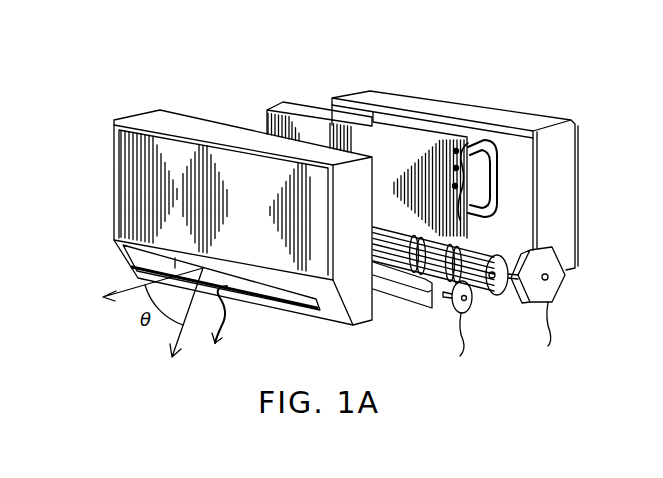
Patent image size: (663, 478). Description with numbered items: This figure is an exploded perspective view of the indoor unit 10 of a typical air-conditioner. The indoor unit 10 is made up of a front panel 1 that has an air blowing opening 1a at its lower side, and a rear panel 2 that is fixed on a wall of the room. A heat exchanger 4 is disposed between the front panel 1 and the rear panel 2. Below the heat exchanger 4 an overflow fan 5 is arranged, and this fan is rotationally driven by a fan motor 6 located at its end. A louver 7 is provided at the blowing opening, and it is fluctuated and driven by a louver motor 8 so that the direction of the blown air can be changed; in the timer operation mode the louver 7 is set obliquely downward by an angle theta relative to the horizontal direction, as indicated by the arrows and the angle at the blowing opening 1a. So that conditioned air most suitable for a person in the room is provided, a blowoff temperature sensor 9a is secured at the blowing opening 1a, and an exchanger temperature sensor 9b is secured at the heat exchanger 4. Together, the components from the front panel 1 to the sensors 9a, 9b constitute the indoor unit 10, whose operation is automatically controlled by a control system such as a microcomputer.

The front panel 1 is at (170, 122).
The blowing opening 1a is at (131, 259).
The rear panel 2 is at (413, 101).
The heat exchanger 4 is at (313, 113).
The overflow fan 5 is at (481, 294).
The fan motor 6 is at (528, 299).
The louver 7 is at (407, 298).
The louver motor 8 is at (448, 301).
The blowoff temperature sensor 9a is at (235, 315).
The exchanger temperature sensor 9b is at (470, 142).
The indoor unit 10 is at (417, 61).